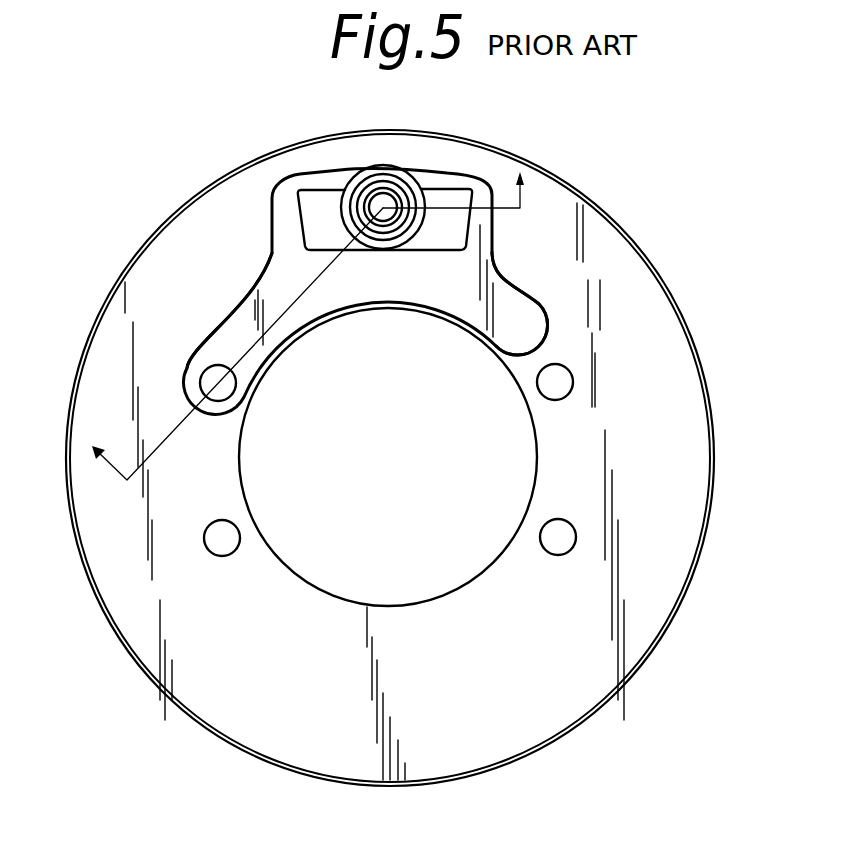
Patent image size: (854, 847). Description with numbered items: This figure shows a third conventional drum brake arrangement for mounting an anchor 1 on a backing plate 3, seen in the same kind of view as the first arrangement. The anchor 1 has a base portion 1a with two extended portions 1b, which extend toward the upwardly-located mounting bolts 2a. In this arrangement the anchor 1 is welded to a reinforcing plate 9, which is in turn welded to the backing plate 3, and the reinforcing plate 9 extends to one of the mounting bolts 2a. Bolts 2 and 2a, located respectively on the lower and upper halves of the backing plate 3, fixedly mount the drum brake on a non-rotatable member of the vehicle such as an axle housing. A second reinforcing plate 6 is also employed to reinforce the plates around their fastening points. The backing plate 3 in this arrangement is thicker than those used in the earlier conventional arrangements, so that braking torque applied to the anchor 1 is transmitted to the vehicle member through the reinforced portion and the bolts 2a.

The anchor 1 is at (410, 261).
The base portion 1a is at (290, 227).
The extended portions 1b is at (243, 313).
The bolts 2 is at (218, 541).
The bolts 2a is at (207, 377).
The backing plate 3 is at (672, 465).
The second reinforcing plate 6 is at (313, 331).
The reinforcing plate 9 is at (520, 303).